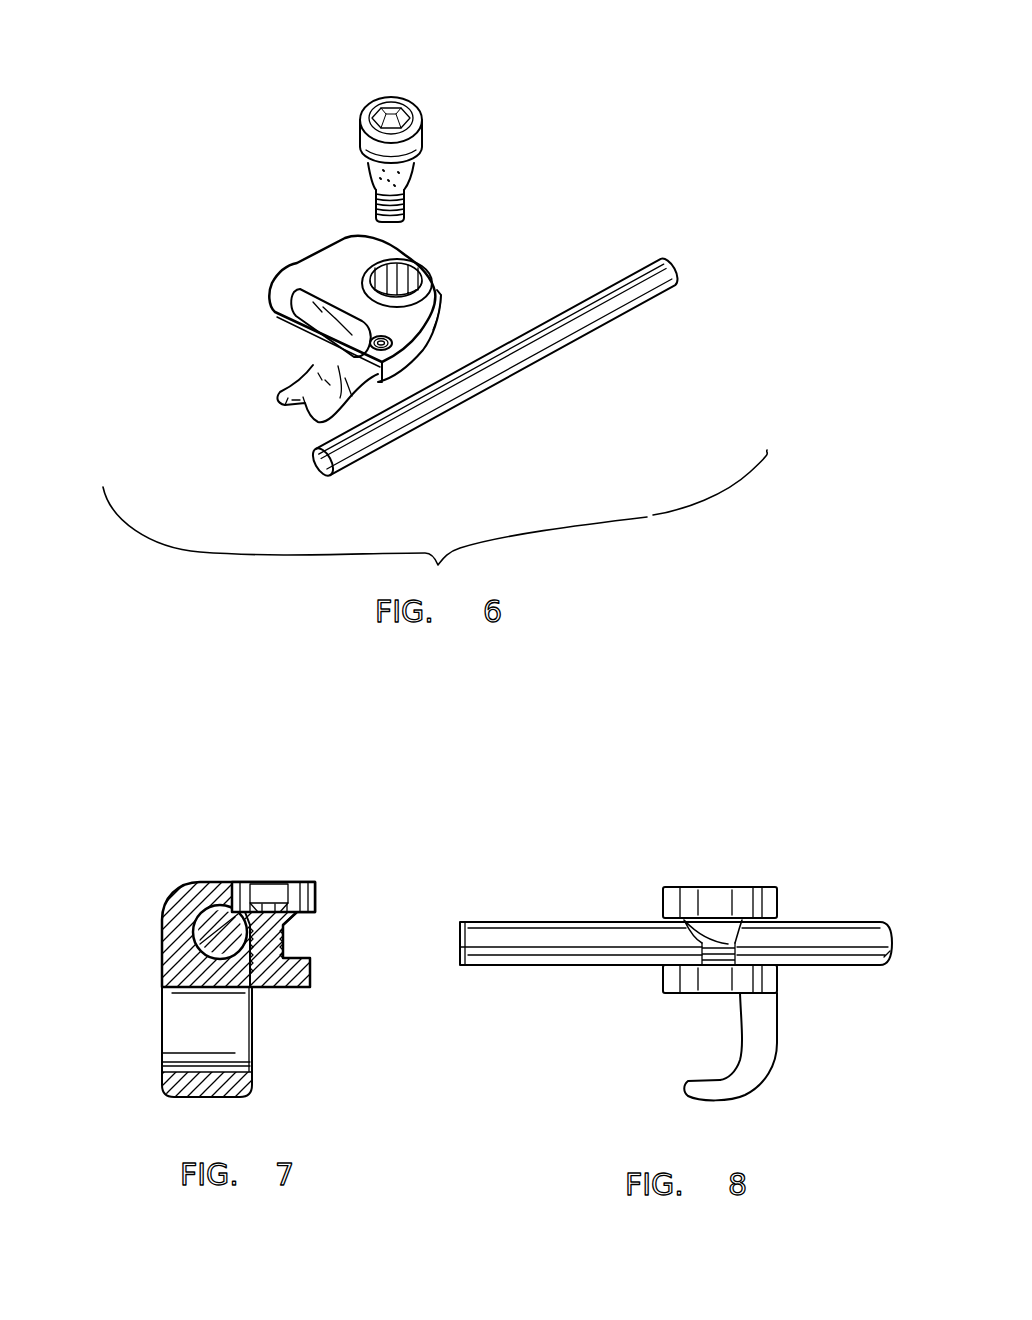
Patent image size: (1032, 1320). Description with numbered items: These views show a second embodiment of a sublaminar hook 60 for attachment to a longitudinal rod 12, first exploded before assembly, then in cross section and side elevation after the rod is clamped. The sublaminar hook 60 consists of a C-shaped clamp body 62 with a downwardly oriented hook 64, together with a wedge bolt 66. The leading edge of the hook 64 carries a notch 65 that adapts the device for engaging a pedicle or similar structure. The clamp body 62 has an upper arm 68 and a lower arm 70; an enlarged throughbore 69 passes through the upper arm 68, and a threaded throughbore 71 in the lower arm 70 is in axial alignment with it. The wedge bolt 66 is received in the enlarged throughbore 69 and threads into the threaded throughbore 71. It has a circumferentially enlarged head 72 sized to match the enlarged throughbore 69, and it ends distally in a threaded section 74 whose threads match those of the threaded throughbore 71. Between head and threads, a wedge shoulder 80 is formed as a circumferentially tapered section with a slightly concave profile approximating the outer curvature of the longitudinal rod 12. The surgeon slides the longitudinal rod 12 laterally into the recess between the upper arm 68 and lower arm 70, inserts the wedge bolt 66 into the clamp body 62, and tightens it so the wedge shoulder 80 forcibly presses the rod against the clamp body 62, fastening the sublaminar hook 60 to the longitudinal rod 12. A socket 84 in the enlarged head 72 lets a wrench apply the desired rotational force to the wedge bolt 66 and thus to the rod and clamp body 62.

In FIG. 6, the longitudinal rod 12 is at (528, 342).
In FIG. 7, the longitudinal rod 12 is at (165, 958).
In FIG. 8, the longitudinal rod 12 is at (803, 947).
In FIG. 6, the sublaminar hook 60 is at (560, 160).
In FIG. 7, the sublaminar hook 60 is at (265, 825).
In FIG. 8, the sublaminar hook 60 is at (778, 845).
In FIG. 6, the clamp body 62 is at (282, 300).
In FIG. 7, the clamp body 62 is at (177, 932).
In FIG. 8, the clamp body 62 is at (775, 905).
In FIG. 6, the hook 64 is at (320, 375).
In FIG. 7, the hook 64 is at (200, 1043).
In FIG. 8, the hook 64 is at (745, 1078).
In FIG. 6, the notch 65 is at (298, 405).
In FIG. 6, the wedge bolt 66 is at (365, 146).
In FIG. 7, the wedge bolt 66 is at (287, 930).
In FIG. 8, the wedge bolt 66 is at (760, 925).
In FIG. 6, the upper arm 68 is at (434, 302).
In FIG. 7, the upper arm 68 is at (317, 890).
In FIG. 8, the upper arm 68 is at (665, 898).
In FIG. 6, the enlarged throughbore 69 is at (397, 268).
In FIG. 6, the lower arm 70 is at (388, 345).
In FIG. 7, the lower arm 70 is at (308, 975).
In FIG. 8, the lower arm 70 is at (693, 980).
In FIG. 6, the threaded throughbore 71 is at (326, 430).
In FIG. 6, the enlarged head 72 is at (418, 125).
In FIG. 6, the threaded section 74 is at (375, 208).
In FIG. 6, the wedge shoulder 80 is at (410, 175).
In FIG. 7, the wedge shoulder 80 is at (290, 920).
In FIG. 8, the wedge shoulder 80 is at (695, 930).
In FIG. 6, the socket 84 is at (386, 114).